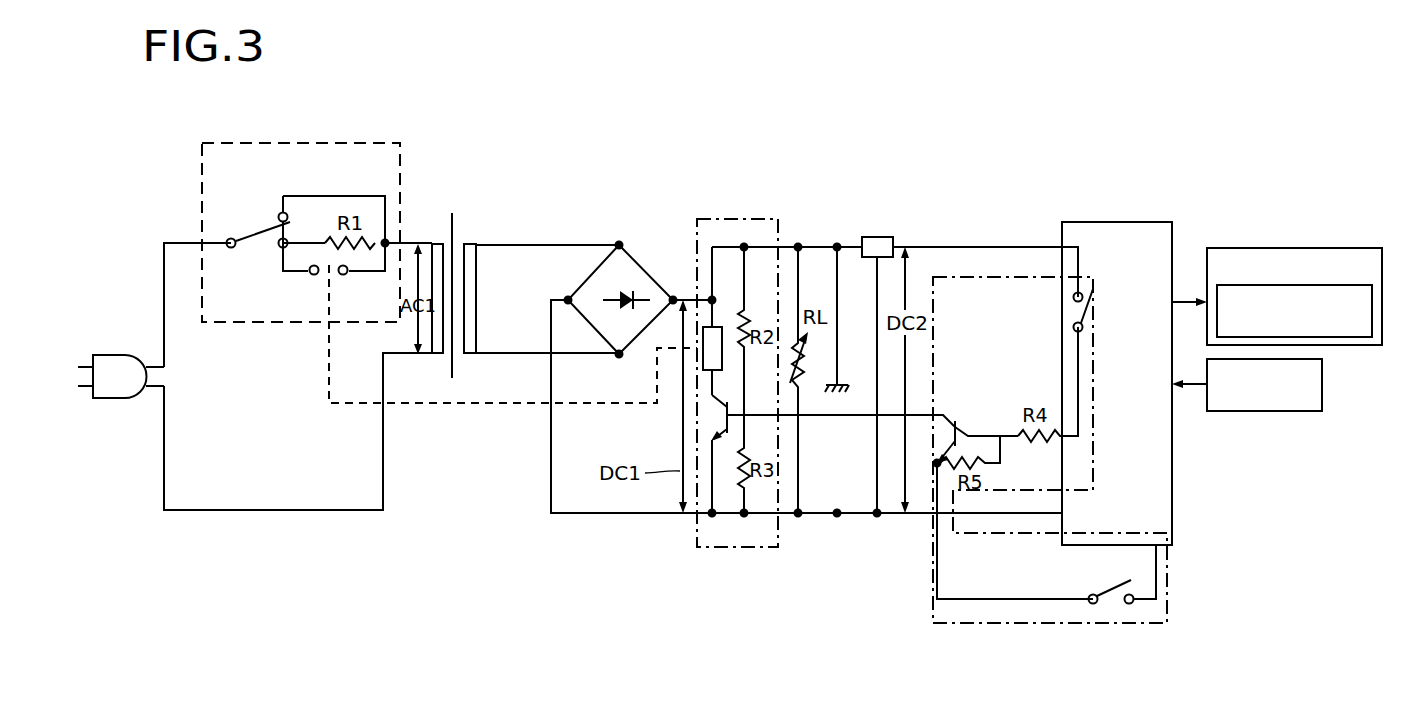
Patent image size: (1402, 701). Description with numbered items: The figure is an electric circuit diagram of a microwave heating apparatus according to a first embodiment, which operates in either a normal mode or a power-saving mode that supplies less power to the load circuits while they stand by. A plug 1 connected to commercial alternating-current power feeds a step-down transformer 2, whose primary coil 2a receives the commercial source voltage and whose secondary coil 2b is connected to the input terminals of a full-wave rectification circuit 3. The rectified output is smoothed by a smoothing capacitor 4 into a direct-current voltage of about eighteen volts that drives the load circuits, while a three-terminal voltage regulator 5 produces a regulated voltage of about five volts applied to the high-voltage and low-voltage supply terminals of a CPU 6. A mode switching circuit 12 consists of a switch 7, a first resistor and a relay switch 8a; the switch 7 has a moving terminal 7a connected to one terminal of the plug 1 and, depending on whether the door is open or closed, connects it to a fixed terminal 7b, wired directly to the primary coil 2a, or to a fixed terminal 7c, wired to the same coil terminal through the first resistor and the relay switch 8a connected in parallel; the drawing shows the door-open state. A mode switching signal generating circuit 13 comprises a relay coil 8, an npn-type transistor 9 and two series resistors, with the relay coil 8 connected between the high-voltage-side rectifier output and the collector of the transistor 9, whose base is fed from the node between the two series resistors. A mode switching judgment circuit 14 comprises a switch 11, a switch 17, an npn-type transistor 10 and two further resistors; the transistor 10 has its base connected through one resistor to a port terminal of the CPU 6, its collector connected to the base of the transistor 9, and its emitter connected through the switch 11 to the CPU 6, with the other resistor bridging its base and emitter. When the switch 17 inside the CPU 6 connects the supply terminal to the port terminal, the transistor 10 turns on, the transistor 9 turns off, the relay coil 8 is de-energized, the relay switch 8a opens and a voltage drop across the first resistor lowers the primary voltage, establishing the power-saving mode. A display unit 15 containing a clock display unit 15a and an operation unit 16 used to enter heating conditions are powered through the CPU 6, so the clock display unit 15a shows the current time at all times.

The plug 1 is at (115, 352).
The step-down transformer 2 is at (456, 222).
The primary coil 2a is at (437, 243).
The secondary coil 2b is at (470, 245).
The full-wave rectification circuit 3 is at (651, 275).
The smoothing capacitor 4 is at (853, 385).
The three-terminal voltage regulator 5 is at (880, 237).
The CPU 6 is at (1160, 222).
The switch 7 is at (263, 227).
The moving terminal 7a is at (247, 238).
The fixed terminal 7b is at (280, 213).
The fixed terminal 7c is at (279, 248).
The relay coil 8 is at (722, 322).
The relay switch 8a is at (322, 275).
The npn-type transistor 9 is at (718, 434).
The npn-type transistor 10 is at (965, 430).
The switch 11 is at (1123, 574).
The mode switching circuit 12 is at (333, 143).
The mode switching signal generating circuit 13 is at (715, 218).
The mode switching judgment circuit 14 is at (990, 623).
The display unit 15 is at (1312, 248).
The clock display unit 15a is at (1360, 285).
The operation unit 16 is at (1248, 411).
The switch 17 is at (1070, 309).